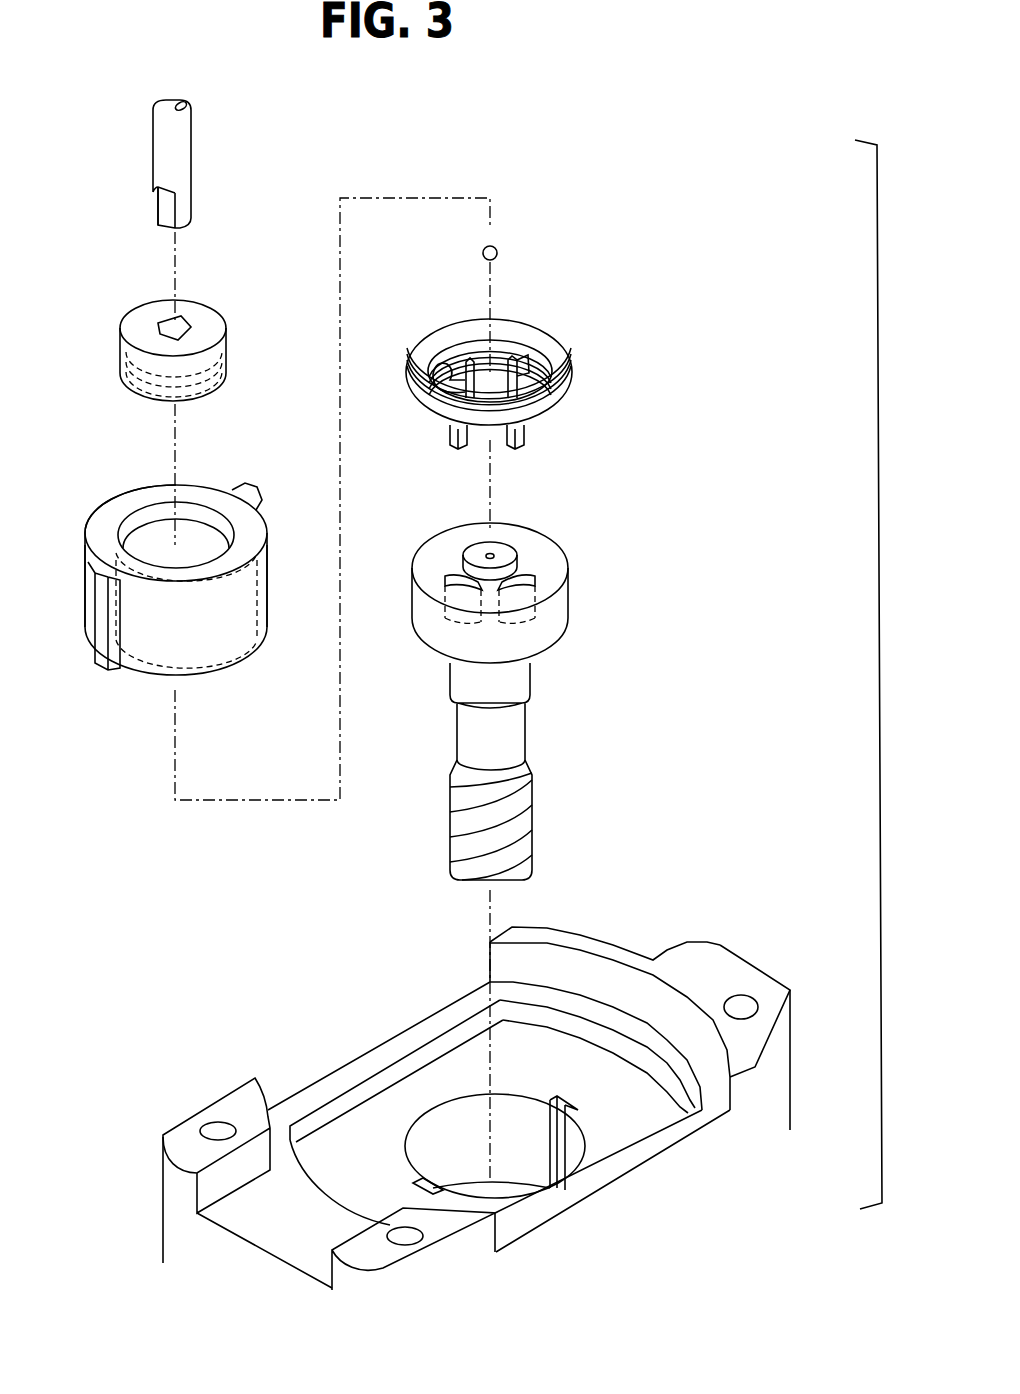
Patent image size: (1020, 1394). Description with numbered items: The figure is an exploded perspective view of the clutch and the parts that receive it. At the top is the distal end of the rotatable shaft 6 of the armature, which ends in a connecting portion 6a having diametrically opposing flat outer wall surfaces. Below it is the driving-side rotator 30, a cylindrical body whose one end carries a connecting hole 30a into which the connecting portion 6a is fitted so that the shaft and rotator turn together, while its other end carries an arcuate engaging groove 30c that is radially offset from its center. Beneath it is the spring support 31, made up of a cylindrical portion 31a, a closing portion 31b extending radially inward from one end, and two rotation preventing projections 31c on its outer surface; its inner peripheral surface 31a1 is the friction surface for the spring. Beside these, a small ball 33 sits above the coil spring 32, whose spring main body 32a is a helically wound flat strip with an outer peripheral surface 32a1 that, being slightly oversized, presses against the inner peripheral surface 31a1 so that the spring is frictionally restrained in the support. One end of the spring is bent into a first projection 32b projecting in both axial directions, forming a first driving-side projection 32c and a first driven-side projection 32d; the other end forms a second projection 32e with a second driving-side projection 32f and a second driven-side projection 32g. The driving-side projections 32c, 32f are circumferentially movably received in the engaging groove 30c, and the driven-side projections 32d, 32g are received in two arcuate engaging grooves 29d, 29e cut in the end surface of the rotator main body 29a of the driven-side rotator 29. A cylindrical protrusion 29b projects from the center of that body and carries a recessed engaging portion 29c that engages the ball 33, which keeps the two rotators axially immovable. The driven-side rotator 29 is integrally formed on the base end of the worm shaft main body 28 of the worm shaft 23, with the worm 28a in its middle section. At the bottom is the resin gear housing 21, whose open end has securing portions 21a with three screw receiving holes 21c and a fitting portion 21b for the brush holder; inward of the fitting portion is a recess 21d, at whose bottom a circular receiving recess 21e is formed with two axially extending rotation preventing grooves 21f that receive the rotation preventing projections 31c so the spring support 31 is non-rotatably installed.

The rotatable shaft 6 is at (184, 148).
The connecting portion 6a is at (158, 200).
The gear housing 21 is at (645, 930).
The securing portions 21a is at (188, 1126).
The fitting portion 21b is at (582, 1198).
The screw receiving holes 21c is at (226, 1133).
The recess 21d is at (655, 1118).
The receiving recess 21e is at (408, 1152).
The rotation preventing grooves 21f is at (552, 1106).
The worm shaft 23 is at (606, 502).
The worm shaft main body 28 is at (532, 720).
The worm 28a is at (527, 828).
The driven-side rotator 29 is at (556, 538).
The rotator main body 29a is at (560, 616).
The protrusion 29b is at (470, 547).
The engaging portion 29c is at (494, 553).
The engaging groove 29d is at (445, 580).
The engaging groove 29e is at (540, 583).
The driving-side rotator 30 is at (240, 291).
The connecting hole 30a is at (164, 322).
The engaging groove 30c is at (136, 400).
The spring support 31 is at (247, 468).
The cylindrical portion 31a is at (250, 585).
The inner peripheral surface 31a1 is at (203, 546).
The closing portion 31b is at (117, 509).
The rotation preventing projections 31c is at (254, 493).
The coil spring 32 is at (608, 296).
The spring main body 32a is at (571, 371).
The outer peripheral surface 32a1 is at (566, 404).
The first projection 32b is at (458, 340).
The first driving-side projection 32c is at (430, 378).
The first driven-side projection 32d is at (450, 433).
The second projection 32e is at (519, 340).
The second driving-side projection 32f is at (548, 362).
The second driven-side projection 32g is at (525, 433).
The ball 33 is at (498, 248).